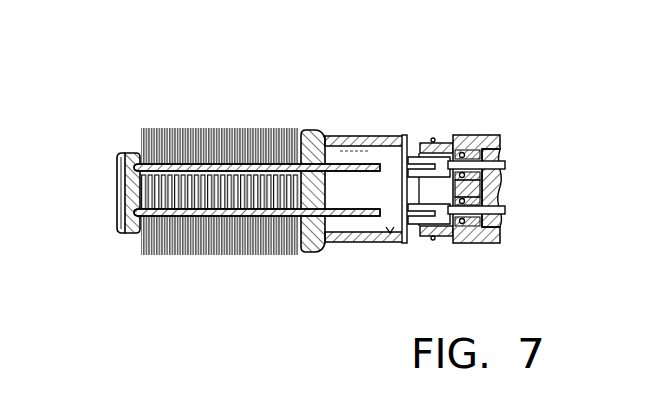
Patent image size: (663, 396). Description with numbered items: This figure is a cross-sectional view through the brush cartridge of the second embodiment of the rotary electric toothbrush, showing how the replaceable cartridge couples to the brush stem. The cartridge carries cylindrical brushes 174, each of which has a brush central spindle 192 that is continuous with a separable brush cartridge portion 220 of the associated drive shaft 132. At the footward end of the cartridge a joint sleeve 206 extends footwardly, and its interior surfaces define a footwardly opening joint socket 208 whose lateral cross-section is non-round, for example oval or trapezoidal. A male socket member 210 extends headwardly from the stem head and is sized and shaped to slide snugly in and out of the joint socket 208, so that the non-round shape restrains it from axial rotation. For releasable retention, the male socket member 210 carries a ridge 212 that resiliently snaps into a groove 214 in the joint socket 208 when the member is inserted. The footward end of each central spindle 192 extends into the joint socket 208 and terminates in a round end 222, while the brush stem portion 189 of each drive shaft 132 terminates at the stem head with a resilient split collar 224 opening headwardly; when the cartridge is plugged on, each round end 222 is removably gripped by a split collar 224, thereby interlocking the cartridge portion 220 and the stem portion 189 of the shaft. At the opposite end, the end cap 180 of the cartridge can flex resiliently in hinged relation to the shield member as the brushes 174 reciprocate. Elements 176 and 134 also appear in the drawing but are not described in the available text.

The drive shaft 132 is at (501, 159).
The bearing housing 134 is at (478, 147).
The cylindrical brushes 174 is at (252, 131).
The end cap 176 is at (132, 153).
The end cap 180 is at (122, 205).
The brush stem portion 189 is at (501, 205).
The brush central spindle 192 is at (232, 210).
The joint sleeve 206 is at (315, 166).
The joint socket 208 is at (369, 143).
The male socket member 210 is at (441, 142).
The ridge 212 is at (435, 240).
The groove 214 is at (391, 229).
The separable brush cartridge portion of the drive shaft 220 is at (357, 217).
The round end 222 is at (376, 161).
The split collar 224 is at (459, 142).